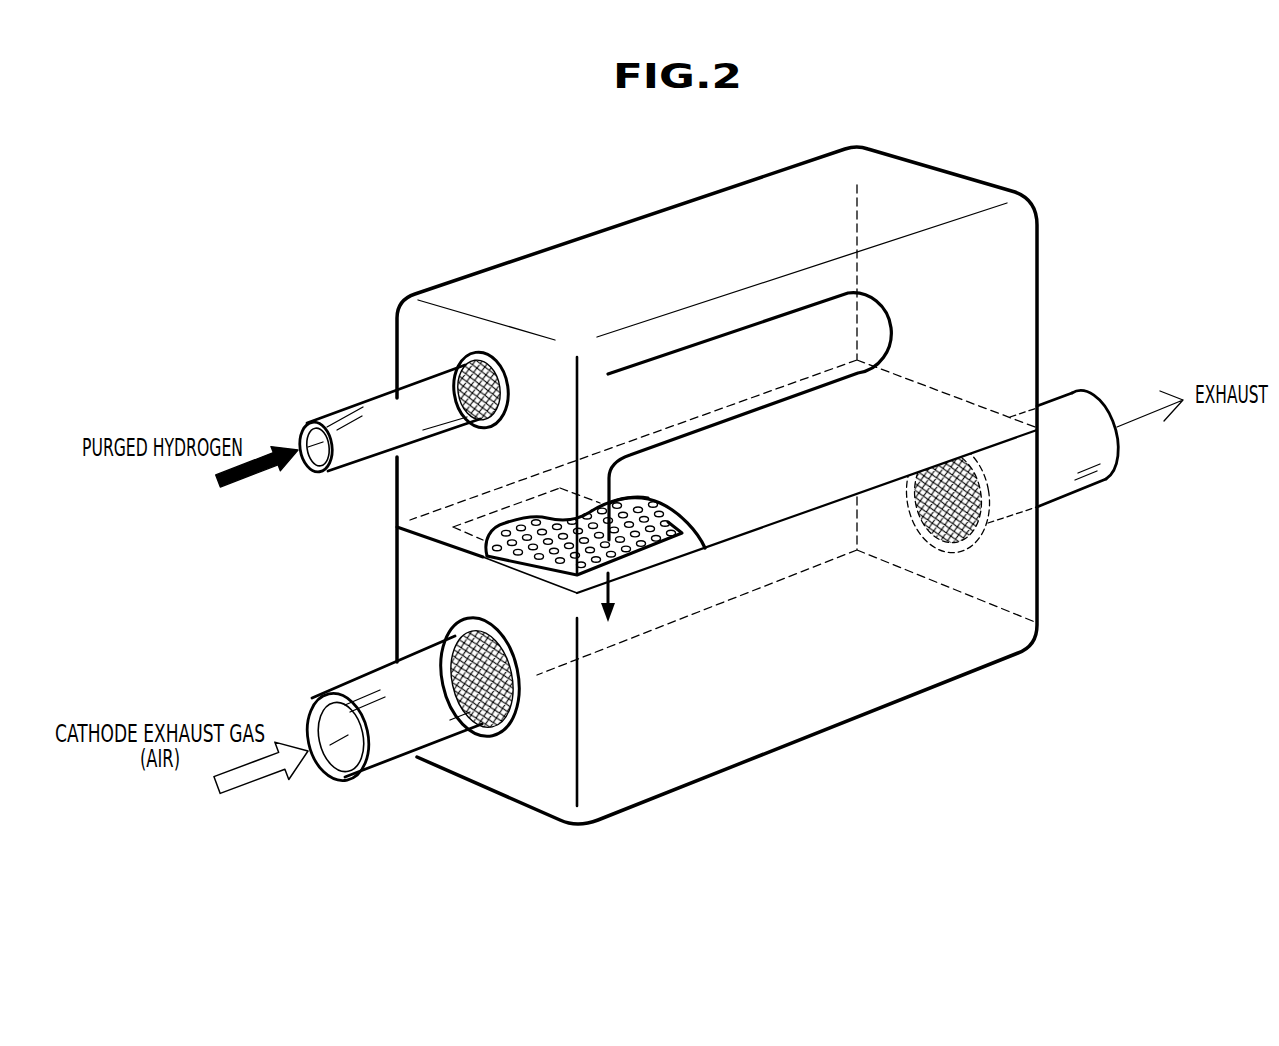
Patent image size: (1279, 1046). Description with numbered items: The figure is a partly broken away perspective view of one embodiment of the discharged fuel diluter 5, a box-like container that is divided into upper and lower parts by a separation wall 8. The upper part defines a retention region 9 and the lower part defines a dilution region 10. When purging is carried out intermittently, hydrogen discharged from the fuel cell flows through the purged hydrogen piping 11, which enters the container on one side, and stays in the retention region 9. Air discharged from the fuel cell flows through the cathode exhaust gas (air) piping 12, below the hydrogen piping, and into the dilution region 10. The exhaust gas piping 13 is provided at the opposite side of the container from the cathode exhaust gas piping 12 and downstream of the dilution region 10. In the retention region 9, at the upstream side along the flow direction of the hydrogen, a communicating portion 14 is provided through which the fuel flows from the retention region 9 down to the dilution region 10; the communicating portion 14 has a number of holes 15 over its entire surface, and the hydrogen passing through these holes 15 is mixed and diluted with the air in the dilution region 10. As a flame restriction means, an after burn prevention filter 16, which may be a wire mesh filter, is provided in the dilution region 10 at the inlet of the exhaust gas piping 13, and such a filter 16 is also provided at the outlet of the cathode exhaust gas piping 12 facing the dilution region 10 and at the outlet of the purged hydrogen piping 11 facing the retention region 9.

The discharged fuel diluter 5 is at (620, 193).
The separation wall 8 is at (912, 415).
The retention region 9 is at (758, 477).
The dilution region 10 is at (763, 671).
The purged hydrogen piping 11 is at (382, 420).
The cathode exhaust gas (air) piping 12 is at (383, 695).
The exhaust gas piping 13 is at (1075, 427).
The communicating portion 14 is at (633, 558).
The holes 15 is at (673, 528).
The after burn prevention filter 16 is at (496, 360).